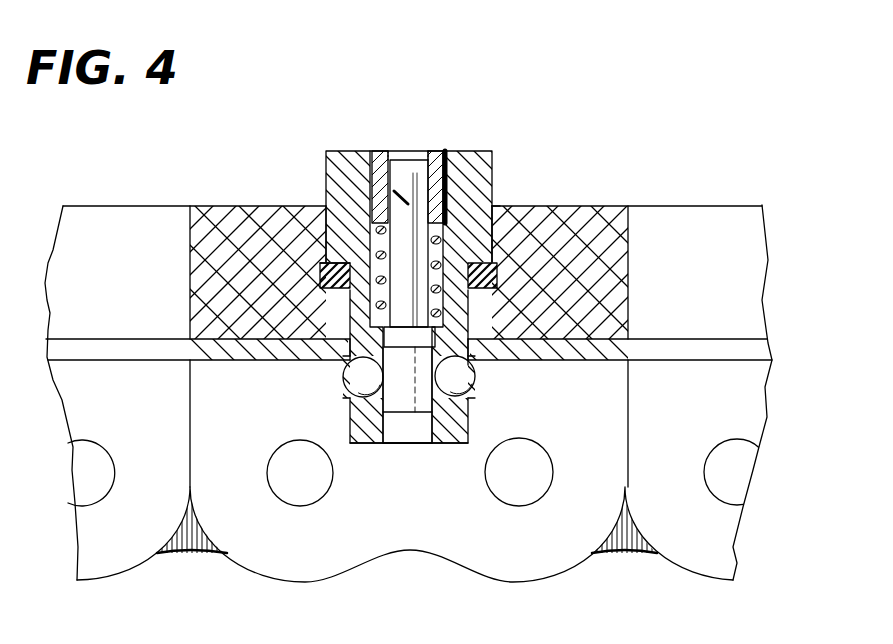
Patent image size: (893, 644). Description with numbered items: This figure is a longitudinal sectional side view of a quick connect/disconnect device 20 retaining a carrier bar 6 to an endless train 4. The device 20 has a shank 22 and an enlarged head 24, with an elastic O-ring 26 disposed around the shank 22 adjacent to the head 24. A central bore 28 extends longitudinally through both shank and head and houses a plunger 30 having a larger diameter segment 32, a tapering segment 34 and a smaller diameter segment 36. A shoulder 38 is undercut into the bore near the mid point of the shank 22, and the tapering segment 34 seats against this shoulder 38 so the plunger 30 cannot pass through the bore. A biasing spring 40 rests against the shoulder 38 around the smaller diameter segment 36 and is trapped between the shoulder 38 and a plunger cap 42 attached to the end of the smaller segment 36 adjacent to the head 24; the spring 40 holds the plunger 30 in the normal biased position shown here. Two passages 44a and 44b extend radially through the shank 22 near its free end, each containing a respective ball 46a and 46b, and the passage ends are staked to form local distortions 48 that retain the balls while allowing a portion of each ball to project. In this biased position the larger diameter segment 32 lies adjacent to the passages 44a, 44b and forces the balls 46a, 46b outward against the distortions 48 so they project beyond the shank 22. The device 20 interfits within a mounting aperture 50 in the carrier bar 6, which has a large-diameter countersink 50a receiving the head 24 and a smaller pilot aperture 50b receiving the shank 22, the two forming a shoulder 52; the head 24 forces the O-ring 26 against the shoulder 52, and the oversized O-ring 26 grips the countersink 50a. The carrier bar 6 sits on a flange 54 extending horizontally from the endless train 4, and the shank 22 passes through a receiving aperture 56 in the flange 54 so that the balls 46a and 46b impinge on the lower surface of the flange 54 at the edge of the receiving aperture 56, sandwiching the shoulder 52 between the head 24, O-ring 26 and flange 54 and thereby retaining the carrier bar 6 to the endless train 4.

The endless train 4 is at (375, 547).
The carrier bar 6 is at (218, 206).
The quick connect/disconnect device 20 is at (420, 295).
The shank 22 is at (378, 443).
The enlarged head 24 is at (458, 152).
The O-ring 26 is at (497, 285).
The central bore 28 is at (403, 443).
The plunger 30 is at (370, 170).
The larger diameter segment 32 is at (417, 443).
The tapering segment 34 is at (384, 347).
The smaller diameter segment 36 is at (401, 166).
The shoulder 38 is at (335, 325).
The biasing spring 40 is at (372, 252).
The plunger cap 42 is at (377, 152).
The passage 44a is at (457, 443).
The passage 44b is at (368, 447).
The ball 46a is at (472, 393).
The ball 46b is at (370, 388).
The distortions 48 is at (345, 357).
The mounting aperture 50 is at (500, 204).
The countersink 50a is at (503, 208).
The pilot aperture 50b is at (470, 328).
The shoulder 52 is at (320, 290).
The flange 54 is at (200, 352).
The receiving aperture 56 is at (473, 363).